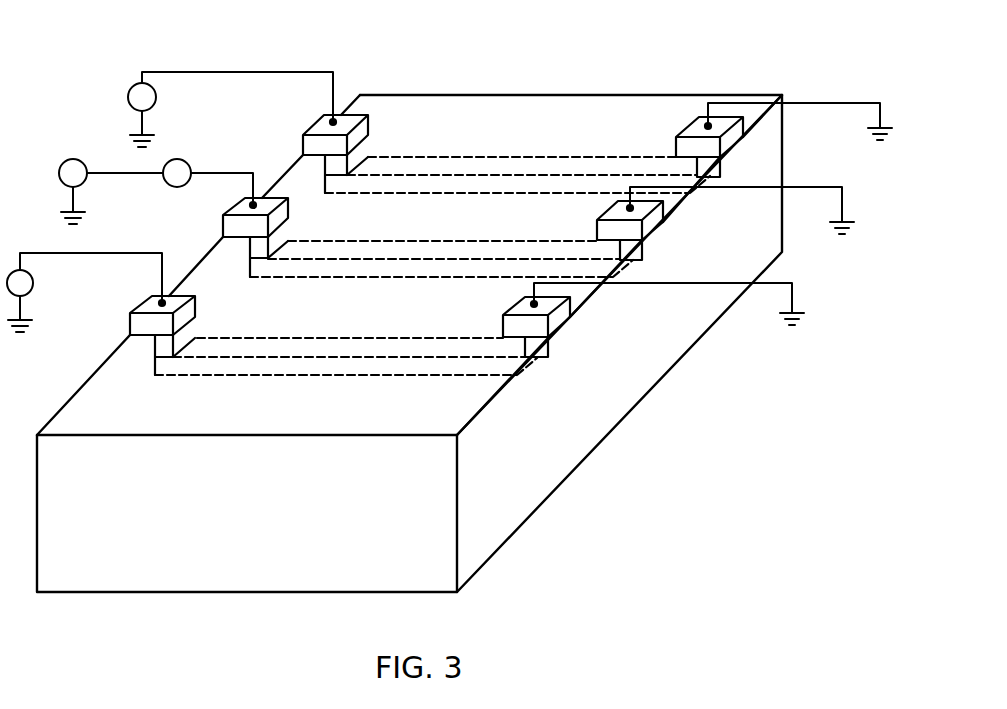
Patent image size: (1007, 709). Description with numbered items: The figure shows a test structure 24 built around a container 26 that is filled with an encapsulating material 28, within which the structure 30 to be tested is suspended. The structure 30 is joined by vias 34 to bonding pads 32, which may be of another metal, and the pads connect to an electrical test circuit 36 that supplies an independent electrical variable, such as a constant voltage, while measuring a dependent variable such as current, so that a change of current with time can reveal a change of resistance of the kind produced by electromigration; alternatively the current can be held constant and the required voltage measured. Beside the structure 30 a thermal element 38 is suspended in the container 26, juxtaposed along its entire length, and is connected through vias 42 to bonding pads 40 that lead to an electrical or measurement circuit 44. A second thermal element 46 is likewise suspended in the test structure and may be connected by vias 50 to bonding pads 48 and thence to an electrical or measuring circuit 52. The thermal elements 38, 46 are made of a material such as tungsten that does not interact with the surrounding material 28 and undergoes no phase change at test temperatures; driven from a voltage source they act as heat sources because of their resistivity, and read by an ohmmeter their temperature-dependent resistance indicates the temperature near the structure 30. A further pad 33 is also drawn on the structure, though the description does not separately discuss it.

The test structure 24 is at (645, 71).
The container 26 is at (548, 437).
The encapsulating material 28 is at (78, 421).
The structure to be tested 30 is at (397, 253).
The bonding pads 32 is at (665, 224).
The contact pad 33 is at (230, 223).
The vias 34 is at (258, 250).
The electrical test circuit 36 is at (120, 168).
The thermal element 38 is at (318, 350).
The bonding pads 40 is at (143, 320).
The vias 42 is at (165, 348).
The electrical or measurement circuit 44 is at (33, 276).
The second thermal element 46 is at (478, 170).
The bonding pads 48 is at (322, 125).
The vias 50 is at (362, 150).
The electrical or measuring circuit 52 is at (220, 104).